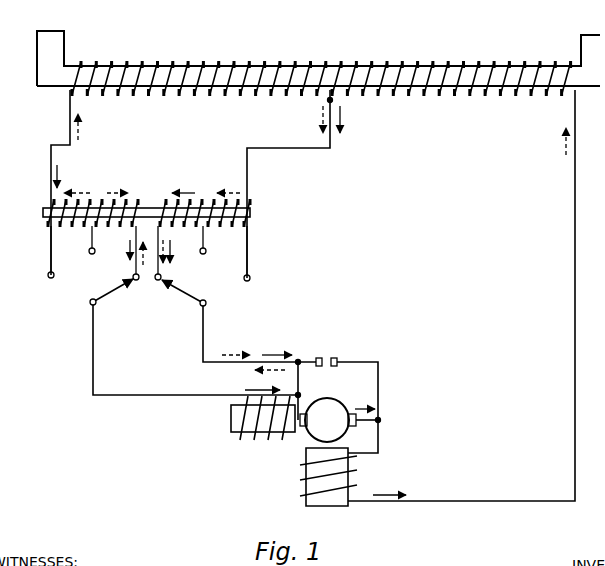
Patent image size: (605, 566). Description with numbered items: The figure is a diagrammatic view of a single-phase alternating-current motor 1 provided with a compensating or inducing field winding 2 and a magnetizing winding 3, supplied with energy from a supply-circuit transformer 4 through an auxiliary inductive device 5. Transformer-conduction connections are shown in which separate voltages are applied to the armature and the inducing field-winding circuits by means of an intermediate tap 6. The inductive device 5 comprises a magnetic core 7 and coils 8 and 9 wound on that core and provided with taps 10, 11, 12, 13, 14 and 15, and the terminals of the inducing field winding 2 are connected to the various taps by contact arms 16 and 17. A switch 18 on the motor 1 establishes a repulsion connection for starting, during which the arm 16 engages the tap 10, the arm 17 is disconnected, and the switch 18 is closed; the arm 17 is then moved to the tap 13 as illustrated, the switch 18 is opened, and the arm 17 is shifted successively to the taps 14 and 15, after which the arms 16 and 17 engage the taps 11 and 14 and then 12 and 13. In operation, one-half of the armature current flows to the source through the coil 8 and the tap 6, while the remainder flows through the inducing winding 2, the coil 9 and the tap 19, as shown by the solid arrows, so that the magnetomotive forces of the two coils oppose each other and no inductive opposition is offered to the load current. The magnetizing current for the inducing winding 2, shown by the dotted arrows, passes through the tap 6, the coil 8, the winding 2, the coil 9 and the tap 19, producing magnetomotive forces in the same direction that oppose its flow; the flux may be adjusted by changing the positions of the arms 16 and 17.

The motor 1 is at (340, 414).
The compensating or inducing field winding 2 is at (266, 436).
The magnetizing winding 3 is at (300, 478).
The supply-circuit transformer 4 is at (455, 96).
The auxiliary inductive device 5 is at (159, 199).
The intermediate tap 6 is at (293, 184).
The magnetic core 7 is at (251, 213).
The coil 8 is at (212, 201).
The coil 9 is at (102, 201).
The tap 10 is at (52, 266).
The tap 11 is at (95, 253).
The tap 12 is at (143, 265).
The tap 13 is at (165, 268).
The tap 14 is at (206, 251).
The tap 15 is at (257, 261).
The contact arm 16 is at (118, 291).
The contact arm 17 is at (190, 291).
The switch 18 is at (337, 397).
The tap 19 is at (70, 121).